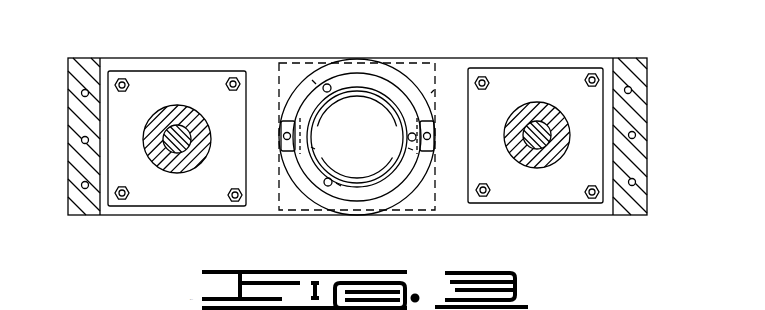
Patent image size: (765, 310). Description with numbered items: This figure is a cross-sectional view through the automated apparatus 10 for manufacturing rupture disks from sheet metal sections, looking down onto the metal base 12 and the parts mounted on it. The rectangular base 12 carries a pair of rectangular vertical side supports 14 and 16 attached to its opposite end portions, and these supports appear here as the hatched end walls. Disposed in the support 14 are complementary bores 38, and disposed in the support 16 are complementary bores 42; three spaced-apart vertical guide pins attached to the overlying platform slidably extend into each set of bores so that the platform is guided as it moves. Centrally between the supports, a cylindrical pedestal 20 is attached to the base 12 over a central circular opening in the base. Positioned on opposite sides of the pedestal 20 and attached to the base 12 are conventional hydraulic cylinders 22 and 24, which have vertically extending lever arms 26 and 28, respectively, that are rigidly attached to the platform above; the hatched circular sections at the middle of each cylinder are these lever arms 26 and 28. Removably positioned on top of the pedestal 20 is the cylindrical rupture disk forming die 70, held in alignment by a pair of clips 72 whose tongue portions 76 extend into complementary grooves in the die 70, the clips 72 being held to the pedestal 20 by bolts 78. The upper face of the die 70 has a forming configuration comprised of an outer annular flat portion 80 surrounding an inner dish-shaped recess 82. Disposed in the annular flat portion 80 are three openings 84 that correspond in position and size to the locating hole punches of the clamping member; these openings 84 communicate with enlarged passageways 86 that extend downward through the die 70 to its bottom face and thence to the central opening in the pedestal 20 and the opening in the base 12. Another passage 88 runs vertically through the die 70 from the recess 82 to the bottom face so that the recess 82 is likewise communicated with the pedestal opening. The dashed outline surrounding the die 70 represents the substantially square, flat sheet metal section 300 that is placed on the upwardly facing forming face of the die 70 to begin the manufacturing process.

The automated apparatus 10 is at (586, 42).
The rectangular base 12 is at (260, 58).
The vertical side support 14 is at (72, 148).
The vertical side support 16 is at (630, 152).
The cylindrical pedestal 20 is at (400, 70).
The hydraulic cylinder 22 is at (182, 70).
The hydraulic cylinder 24 is at (550, 68).
The lever arm 26 is at (202, 111).
The lever arm 28 is at (553, 111).
The bores 38 is at (85, 97).
The bores 42 is at (630, 95).
The rupture disk forming die 70 is at (408, 90).
The clips 72 is at (282, 121).
The tongue portions 76 is at (436, 91).
The bolts 78 is at (283, 146).
The outer annular flat portion 80 is at (348, 80).
The inner dish-shaped recess 82 is at (366, 153).
The openings 84 is at (326, 84).
The enlarged passageways 86 is at (311, 80).
The passage 88 is at (335, 122).
The sheet metal section 300 is at (438, 222).